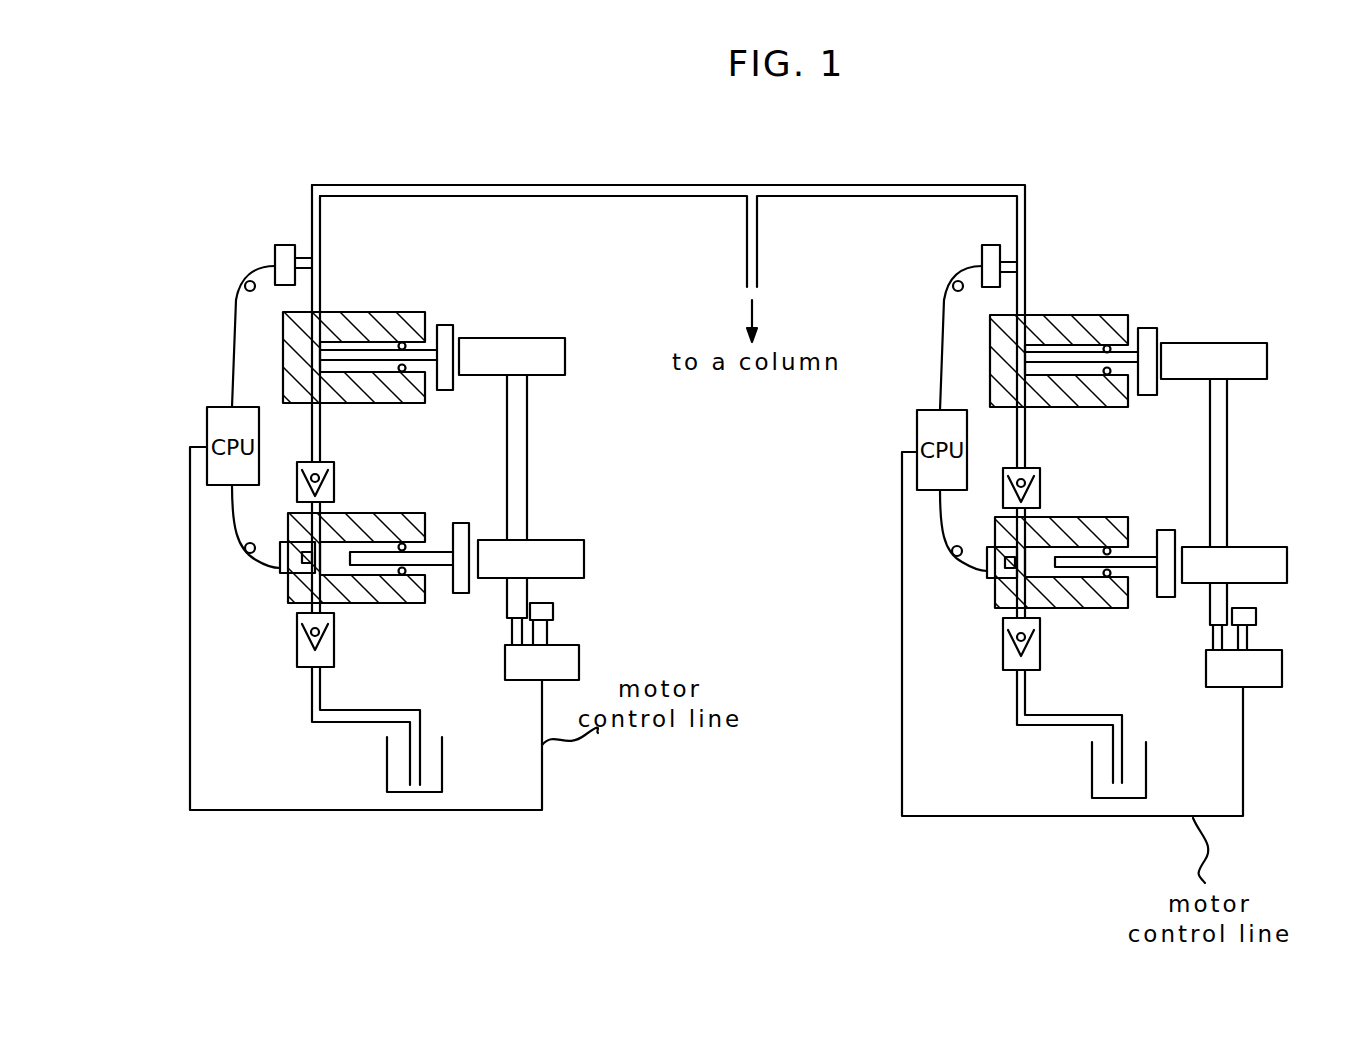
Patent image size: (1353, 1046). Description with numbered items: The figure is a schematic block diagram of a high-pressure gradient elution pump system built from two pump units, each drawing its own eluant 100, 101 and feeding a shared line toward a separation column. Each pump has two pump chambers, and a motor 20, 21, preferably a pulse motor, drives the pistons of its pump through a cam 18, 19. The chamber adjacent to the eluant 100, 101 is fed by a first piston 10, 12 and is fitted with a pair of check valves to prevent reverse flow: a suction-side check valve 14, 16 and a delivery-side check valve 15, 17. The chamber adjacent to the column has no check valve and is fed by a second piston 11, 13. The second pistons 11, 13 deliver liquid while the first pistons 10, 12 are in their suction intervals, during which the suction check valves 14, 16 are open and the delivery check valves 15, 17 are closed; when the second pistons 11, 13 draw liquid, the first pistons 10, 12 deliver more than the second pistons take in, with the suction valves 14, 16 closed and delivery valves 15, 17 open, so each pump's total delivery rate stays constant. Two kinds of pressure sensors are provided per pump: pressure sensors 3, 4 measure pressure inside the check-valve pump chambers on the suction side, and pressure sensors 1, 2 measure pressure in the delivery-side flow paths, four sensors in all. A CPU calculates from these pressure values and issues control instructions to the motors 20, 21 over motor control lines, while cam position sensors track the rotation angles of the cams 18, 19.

The pressure sensor 1 is at (286, 245).
The pressure sensor 2 is at (992, 245).
The pressure sensor 3 is at (282, 576).
The pressure sensor 4 is at (989, 581).
The first piston 10 is at (463, 535).
The second piston 11 is at (447, 325).
The first piston 12 is at (1163, 540).
The second piston 13 is at (1148, 330).
The check valve 14 is at (335, 641).
The check valve 15 is at (335, 467).
The check valve 16 is at (1041, 643).
The check valve 17 is at (1041, 472).
The cam 18 is at (517, 440).
The cam 19 is at (1222, 447).
The motor 20 is at (612, 657).
The motor 21 is at (1278, 665).
The eluant 100 is at (437, 773).
The eluant 101 is at (1140, 778).